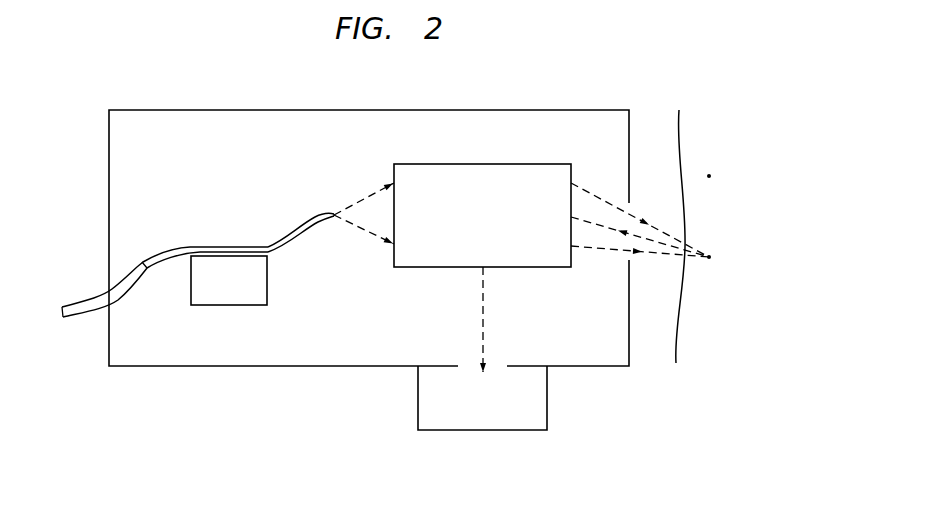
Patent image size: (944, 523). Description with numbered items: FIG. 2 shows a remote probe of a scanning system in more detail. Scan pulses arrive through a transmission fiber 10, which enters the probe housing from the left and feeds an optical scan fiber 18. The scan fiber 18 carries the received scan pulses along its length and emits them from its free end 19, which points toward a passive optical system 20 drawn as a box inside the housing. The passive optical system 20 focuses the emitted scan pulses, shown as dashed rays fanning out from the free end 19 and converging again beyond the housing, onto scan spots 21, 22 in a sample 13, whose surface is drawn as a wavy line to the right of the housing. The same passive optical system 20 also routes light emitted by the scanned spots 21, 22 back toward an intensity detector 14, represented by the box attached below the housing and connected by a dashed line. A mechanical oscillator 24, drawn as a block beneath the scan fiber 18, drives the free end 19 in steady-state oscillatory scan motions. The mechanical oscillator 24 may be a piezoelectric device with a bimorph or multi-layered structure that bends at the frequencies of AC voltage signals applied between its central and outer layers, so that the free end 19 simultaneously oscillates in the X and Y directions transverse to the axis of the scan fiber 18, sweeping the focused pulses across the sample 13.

The transmission fiber 10 is at (90, 299).
The sample 13 is at (776, 152).
The intensity detector 14 is at (495, 414).
The optical scan fiber 18 is at (295, 236).
The free end 19 is at (333, 213).
The passive optical system 20 is at (496, 227).
The scan spot 21 is at (709, 258).
The scan spot 22 is at (709, 177).
The mechanical oscillator 24 is at (241, 291).